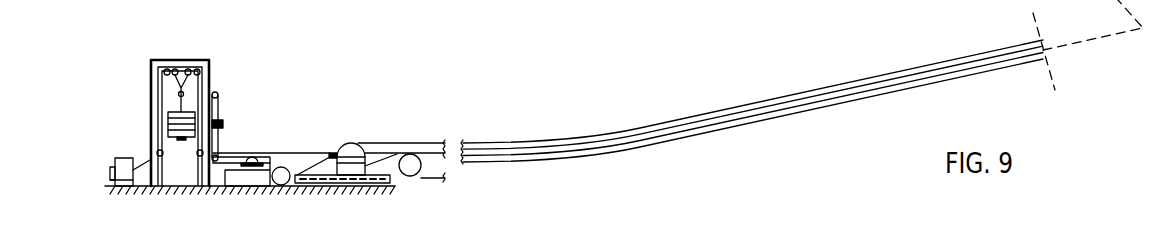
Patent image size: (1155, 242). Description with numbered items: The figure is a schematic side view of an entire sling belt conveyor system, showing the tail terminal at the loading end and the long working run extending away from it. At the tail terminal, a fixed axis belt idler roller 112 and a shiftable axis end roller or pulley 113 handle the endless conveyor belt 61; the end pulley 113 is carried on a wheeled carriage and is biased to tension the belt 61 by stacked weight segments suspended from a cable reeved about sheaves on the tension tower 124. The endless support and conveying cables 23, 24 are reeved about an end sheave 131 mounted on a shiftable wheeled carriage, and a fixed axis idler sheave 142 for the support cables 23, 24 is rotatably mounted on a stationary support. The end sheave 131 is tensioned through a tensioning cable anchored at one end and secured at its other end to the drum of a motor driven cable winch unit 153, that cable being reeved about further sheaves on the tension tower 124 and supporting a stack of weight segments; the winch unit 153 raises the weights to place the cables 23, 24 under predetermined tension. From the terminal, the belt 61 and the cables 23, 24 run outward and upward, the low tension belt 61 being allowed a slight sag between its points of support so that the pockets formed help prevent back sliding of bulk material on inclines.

The tension tower 124 is at (183, 60).
The motor driven cable winch unit 153 is at (122, 158).
The shiftable axis end roller or pulley 113 is at (250, 157).
The fixed axis belt idler roller 112 is at (280, 183).
The end sheave 131 is at (350, 146).
The fixed axis idler sheave 142 is at (415, 160).
The endless conveyor belt 61 is at (555, 146).
The endless support and conveying cable 23 is at (752, 119).
The endless support and conveying cable 24 is at (667, 125).